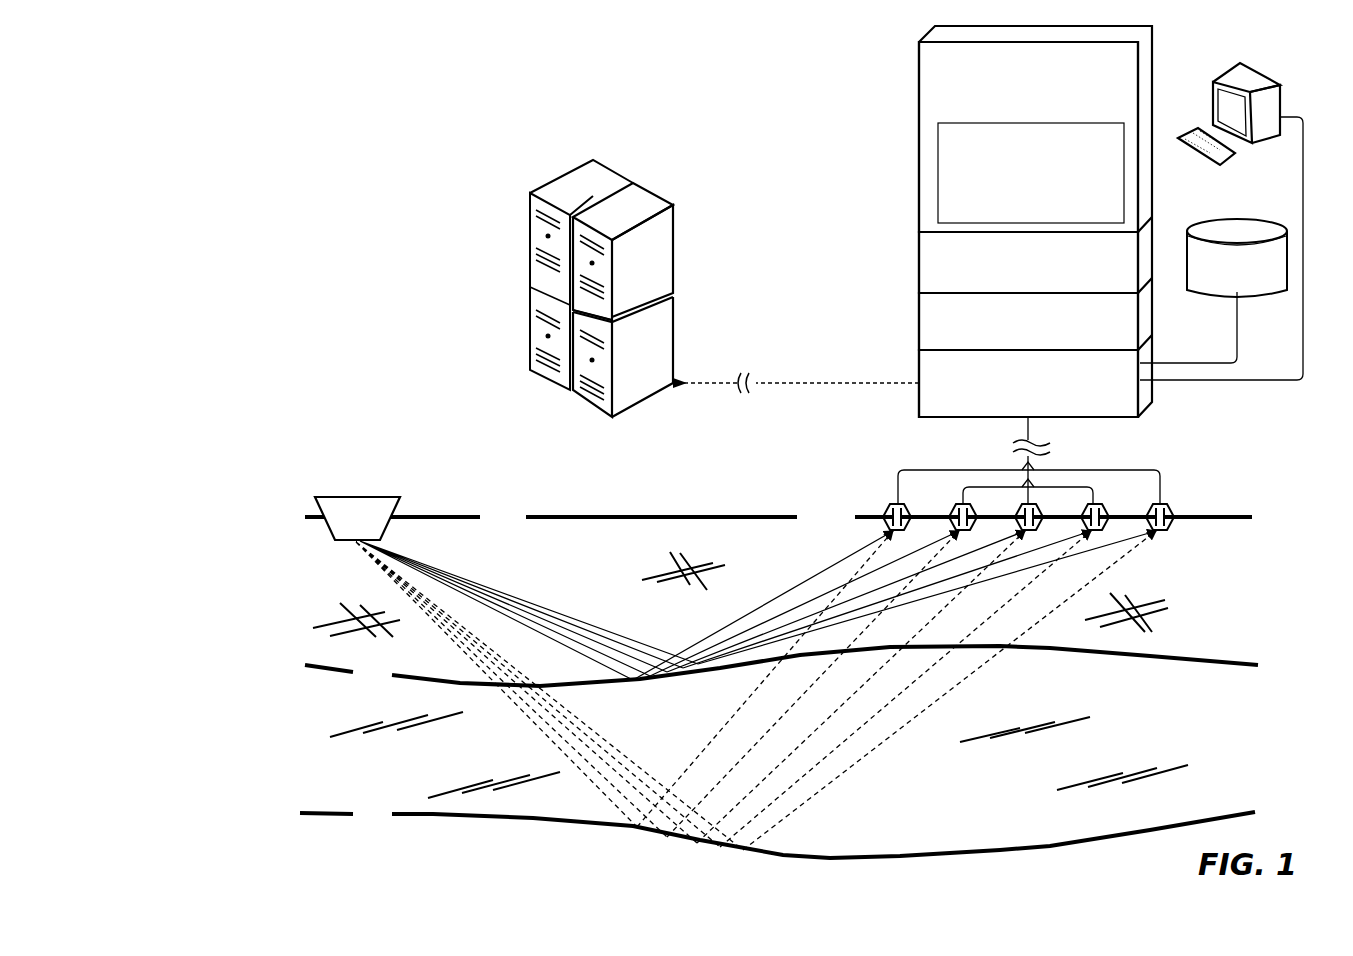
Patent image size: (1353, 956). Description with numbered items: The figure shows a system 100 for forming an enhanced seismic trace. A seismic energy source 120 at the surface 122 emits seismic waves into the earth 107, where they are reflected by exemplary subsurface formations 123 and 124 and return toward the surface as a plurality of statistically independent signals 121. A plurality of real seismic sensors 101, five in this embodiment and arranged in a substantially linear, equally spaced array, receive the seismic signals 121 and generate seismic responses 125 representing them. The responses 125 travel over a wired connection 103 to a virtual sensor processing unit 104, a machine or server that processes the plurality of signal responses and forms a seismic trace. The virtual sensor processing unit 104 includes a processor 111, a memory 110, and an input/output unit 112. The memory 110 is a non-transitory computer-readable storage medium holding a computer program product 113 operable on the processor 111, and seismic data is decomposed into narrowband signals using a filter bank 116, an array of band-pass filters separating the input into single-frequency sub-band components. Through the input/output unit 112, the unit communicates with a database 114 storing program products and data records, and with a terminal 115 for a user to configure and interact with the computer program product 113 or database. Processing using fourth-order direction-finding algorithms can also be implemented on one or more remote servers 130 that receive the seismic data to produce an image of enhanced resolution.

The system 100 is at (790, 25).
The virtual sensor processing unit 104 is at (861, 25).
The memory 110 is at (1028, 137).
The computer program product 113 is at (1031, 173).
The processor 111 is at (1028, 262).
The filter bank 116 is at (1028, 321).
The input/output unit 112 is at (1028, 383).
The database 114 is at (1213, 291).
The terminal 115 is at (1262, 155).
The remote servers 130 is at (572, 408).
The surface 122 is at (778, 518).
The real seismic sensors 101 is at (853, 500).
The wired connection 103 is at (1100, 473).
The seismic responses 125 is at (1028, 517).
The earth 107 is at (282, 518).
The subsurface formation 123 is at (781, 666).
The subsurface formation 124 is at (777, 830).
The statistically independent signals 121 is at (431, 545).
The seismic energy source 120 is at (357, 518).